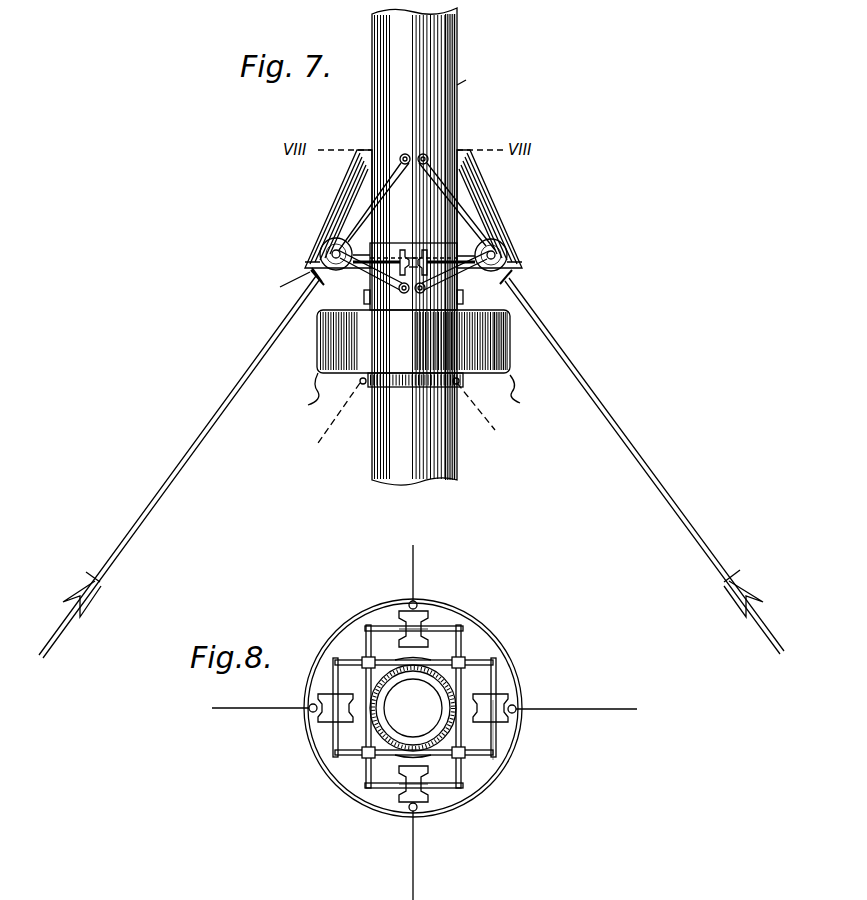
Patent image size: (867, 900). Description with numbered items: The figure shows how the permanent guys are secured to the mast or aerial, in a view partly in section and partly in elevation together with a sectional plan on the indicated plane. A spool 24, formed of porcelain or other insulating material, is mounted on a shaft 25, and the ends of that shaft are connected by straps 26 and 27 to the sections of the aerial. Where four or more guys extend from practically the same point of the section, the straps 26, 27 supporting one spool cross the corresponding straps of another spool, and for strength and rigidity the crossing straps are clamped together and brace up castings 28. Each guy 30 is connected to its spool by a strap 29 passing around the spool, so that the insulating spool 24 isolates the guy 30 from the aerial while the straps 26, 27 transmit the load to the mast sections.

In FIG. 7, the spool 24 is at (397, 272).
In FIG. 8, the spool 24 is at (428, 616).
In FIG. 7, the shaft 25 is at (533, 264).
In FIG. 8, the shaft 25 is at (495, 740).
In FIG. 7, the strap 26 is at (363, 215).
In FIG. 8, the strap 26 is at (353, 755).
In FIG. 7, the strap 27 is at (361, 270).
In FIG. 8, the casting 28 is at (465, 660).
In FIG. 8, the strap 29 is at (410, 603).
In FIG. 7, the guy 30 is at (215, 410).
In FIG. 8, the guy 30 is at (235, 709).